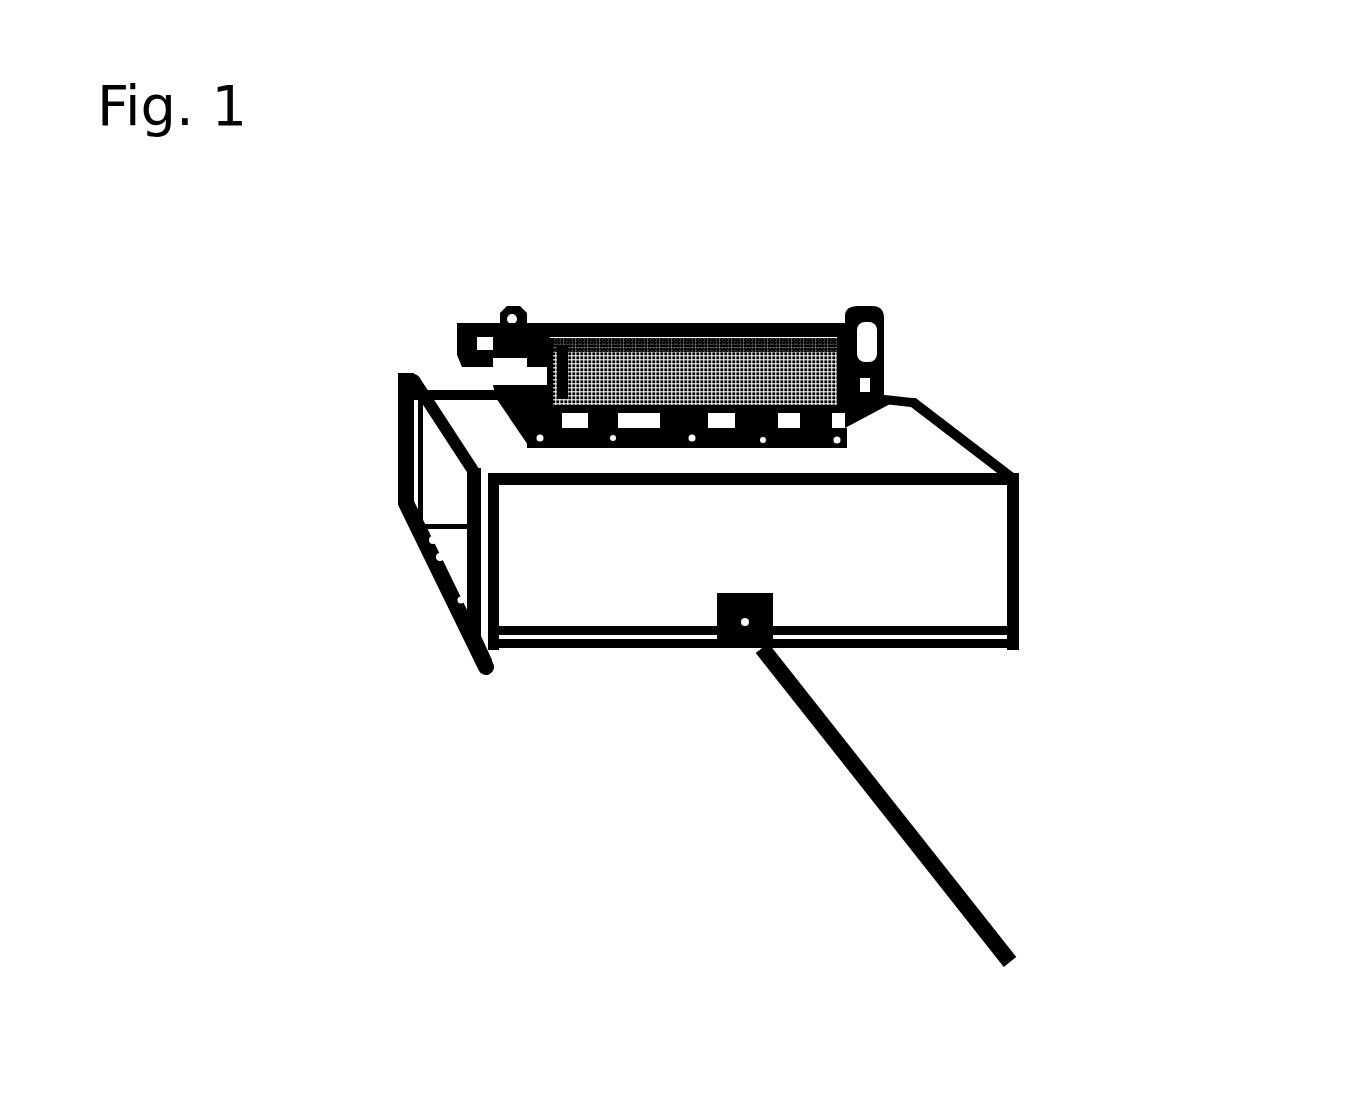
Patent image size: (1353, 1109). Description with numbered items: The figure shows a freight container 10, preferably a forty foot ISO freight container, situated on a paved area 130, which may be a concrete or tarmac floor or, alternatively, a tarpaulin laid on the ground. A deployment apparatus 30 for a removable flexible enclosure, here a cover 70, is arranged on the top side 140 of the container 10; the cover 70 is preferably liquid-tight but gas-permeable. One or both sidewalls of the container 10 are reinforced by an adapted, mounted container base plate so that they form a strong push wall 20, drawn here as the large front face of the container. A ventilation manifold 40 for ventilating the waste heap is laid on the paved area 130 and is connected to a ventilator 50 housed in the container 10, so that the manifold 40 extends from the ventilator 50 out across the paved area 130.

The freight container 10 is at (1055, 406).
The push wall 20 is at (948, 556).
The deployment apparatus 30 is at (412, 312).
The ventilation manifold 40 is at (873, 813).
The ventilator 50 is at (692, 667).
The cover 70 is at (697, 364).
The paved area 130 is at (373, 520).
The top side 140 is at (910, 437).